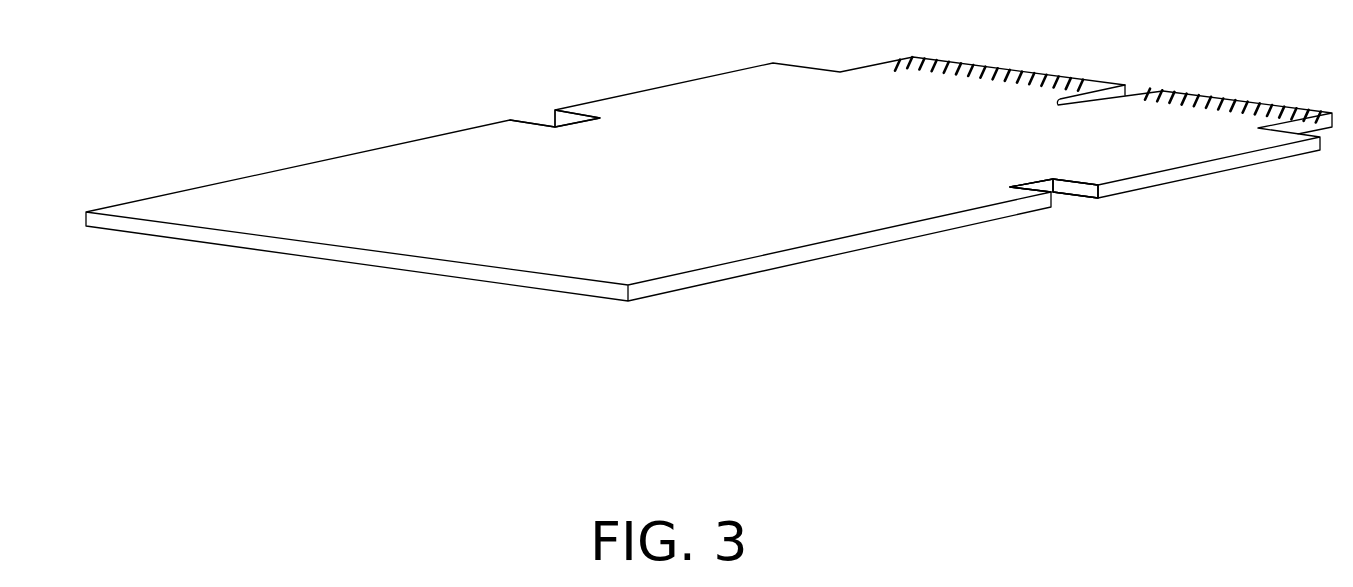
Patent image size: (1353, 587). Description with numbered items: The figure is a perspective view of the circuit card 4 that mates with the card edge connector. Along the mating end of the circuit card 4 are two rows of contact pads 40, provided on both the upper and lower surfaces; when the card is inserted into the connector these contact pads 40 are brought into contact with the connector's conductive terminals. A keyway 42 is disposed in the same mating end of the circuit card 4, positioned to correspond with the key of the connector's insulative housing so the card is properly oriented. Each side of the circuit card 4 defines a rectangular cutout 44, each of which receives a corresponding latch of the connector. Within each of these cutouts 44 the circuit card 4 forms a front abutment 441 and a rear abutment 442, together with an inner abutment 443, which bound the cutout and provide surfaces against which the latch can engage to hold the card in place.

The circuit card 4 is at (746, 280).
The contact pads 40 is at (918, 62).
The keyway 42 is at (1090, 98).
The rectangular cutout 44 is at (548, 117).
The front abutment 441 is at (1118, 195).
The rear abutment 442 is at (1028, 195).
The inner abutment 443 is at (1043, 183).